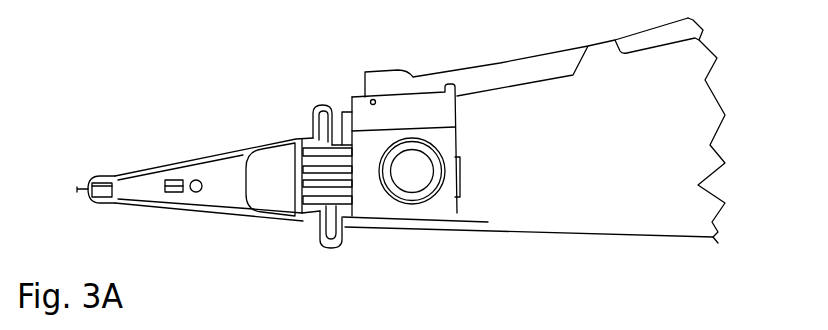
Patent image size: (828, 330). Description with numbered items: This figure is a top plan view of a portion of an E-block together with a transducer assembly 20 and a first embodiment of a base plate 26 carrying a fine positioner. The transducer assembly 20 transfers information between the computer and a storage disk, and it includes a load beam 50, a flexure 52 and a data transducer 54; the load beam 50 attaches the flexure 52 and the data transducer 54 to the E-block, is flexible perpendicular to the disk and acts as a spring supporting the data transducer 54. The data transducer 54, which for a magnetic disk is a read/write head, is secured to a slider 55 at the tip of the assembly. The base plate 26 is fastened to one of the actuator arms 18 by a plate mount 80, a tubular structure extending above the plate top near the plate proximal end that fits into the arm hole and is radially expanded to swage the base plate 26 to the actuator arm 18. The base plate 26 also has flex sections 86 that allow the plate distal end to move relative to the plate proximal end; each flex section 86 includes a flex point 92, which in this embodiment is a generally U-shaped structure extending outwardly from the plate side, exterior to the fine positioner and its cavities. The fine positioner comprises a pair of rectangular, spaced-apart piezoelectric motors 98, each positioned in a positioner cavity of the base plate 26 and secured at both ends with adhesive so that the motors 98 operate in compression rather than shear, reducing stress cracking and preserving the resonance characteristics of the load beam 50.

The actuator arm 18 is at (606, 256).
The transducer assembly 20 is at (223, 133).
The base plate 26 is at (370, 197).
The load beam 50 is at (223, 193).
The flexure 52 is at (171, 207).
The data transducer 54 is at (82, 186).
The slider 55 is at (104, 190).
The plate mount 80 is at (423, 190).
The flex section 86 is at (317, 107).
The flex point 92 is at (333, 103).
The piezoelectric motor 98 is at (313, 197).